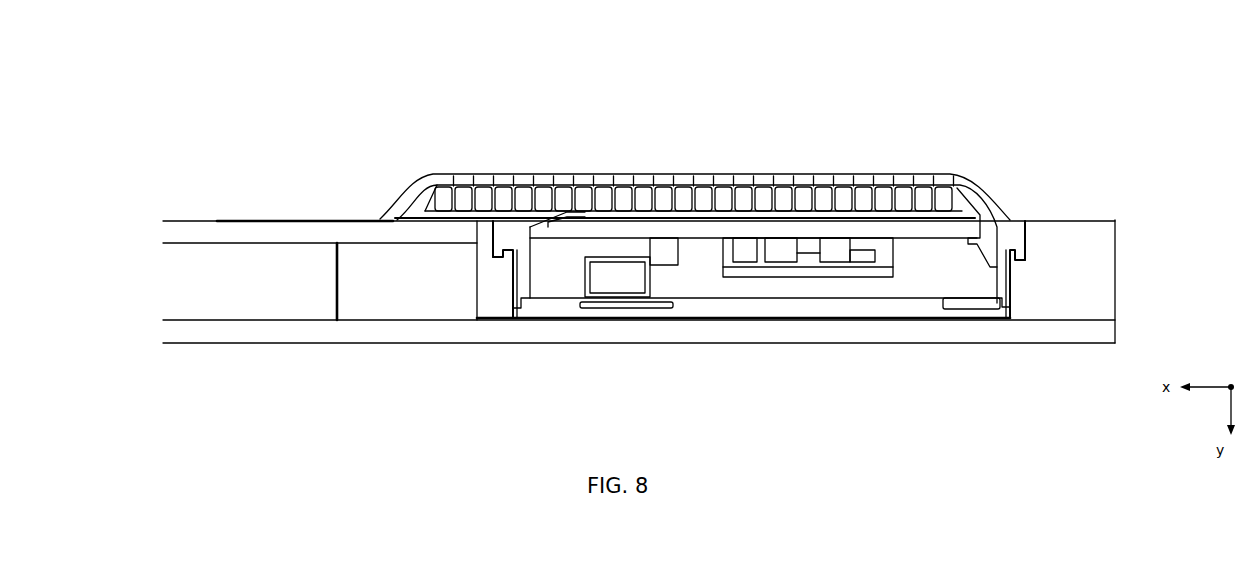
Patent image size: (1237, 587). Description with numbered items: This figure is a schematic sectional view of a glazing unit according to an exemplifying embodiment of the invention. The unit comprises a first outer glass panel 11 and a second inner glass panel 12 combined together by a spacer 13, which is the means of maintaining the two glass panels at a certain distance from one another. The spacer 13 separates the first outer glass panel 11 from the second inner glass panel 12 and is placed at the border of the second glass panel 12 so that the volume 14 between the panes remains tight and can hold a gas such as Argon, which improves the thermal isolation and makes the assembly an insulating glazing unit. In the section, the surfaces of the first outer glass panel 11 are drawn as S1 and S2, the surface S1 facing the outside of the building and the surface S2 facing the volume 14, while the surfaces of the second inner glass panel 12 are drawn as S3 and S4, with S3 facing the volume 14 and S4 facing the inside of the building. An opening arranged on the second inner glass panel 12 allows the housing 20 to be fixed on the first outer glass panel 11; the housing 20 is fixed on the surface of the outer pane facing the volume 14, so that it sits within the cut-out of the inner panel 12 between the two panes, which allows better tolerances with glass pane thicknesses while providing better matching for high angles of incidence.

The first outer glass panel 11 is at (190, 337).
The second inner glass panel 12 is at (175, 231).
The spacer 13 is at (370, 273).
The volume 14 is at (185, 281).
The housing 20 is at (887, 90).
The lower surface of lower substrate S1 is at (183, 344).
The upper surface of lower substrate S2 is at (213, 322).
The lower surface of upper plate S3 is at (181, 242).
The upper surface of upper plate S4 is at (236, 218).